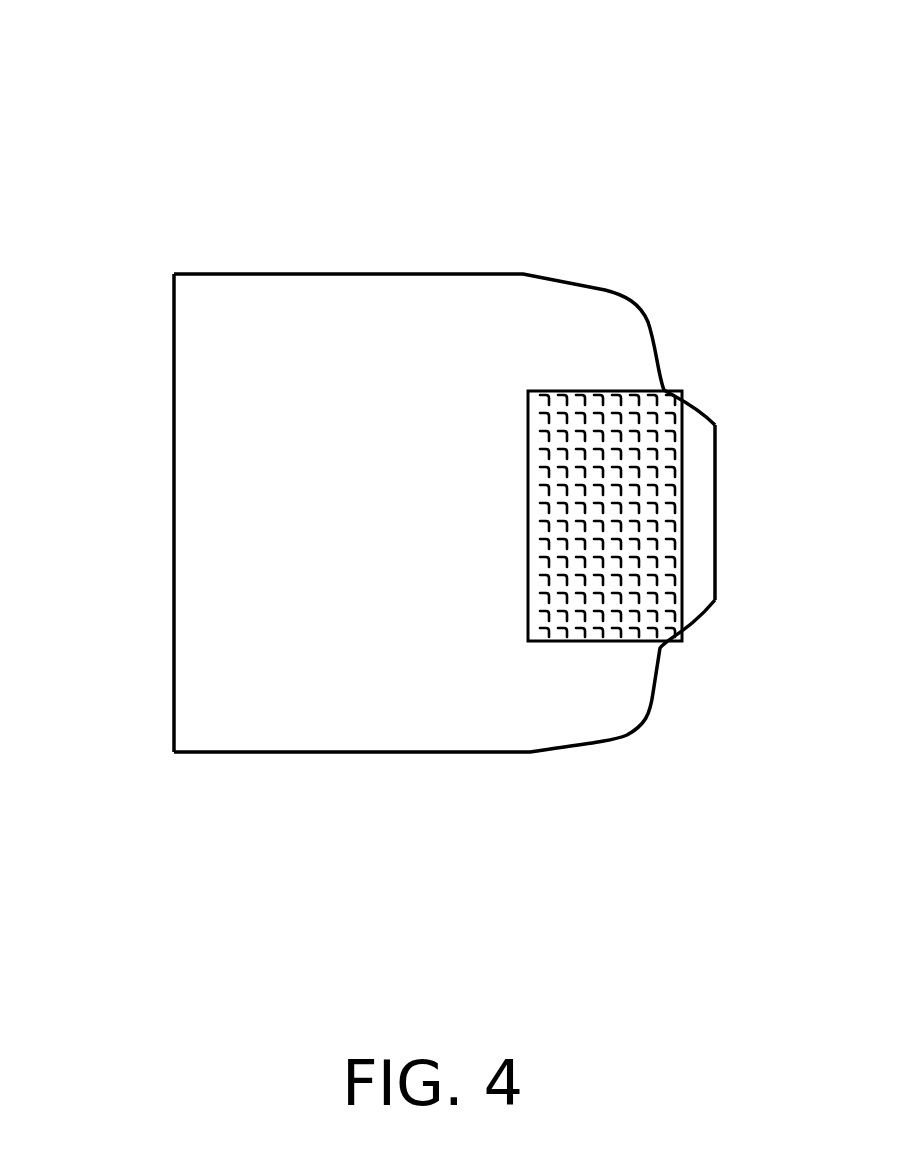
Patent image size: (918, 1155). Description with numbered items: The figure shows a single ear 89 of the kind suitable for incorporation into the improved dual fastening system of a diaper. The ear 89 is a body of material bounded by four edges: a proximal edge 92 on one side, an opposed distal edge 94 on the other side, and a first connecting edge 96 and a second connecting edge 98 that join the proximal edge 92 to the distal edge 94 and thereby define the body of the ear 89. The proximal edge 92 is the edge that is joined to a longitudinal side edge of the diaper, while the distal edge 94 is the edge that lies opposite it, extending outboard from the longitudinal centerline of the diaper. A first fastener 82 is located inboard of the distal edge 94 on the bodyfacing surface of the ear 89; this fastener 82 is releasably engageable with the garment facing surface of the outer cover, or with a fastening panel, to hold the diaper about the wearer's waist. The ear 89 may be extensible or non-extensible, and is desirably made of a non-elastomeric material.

The ear 89 is at (172, 103).
The first fastener 82 is at (582, 412).
The proximal edge 92 is at (174, 389).
The distal edge 94 is at (716, 506).
The first connecting edge 96 is at (389, 275).
The second connecting edge 98 is at (316, 755).